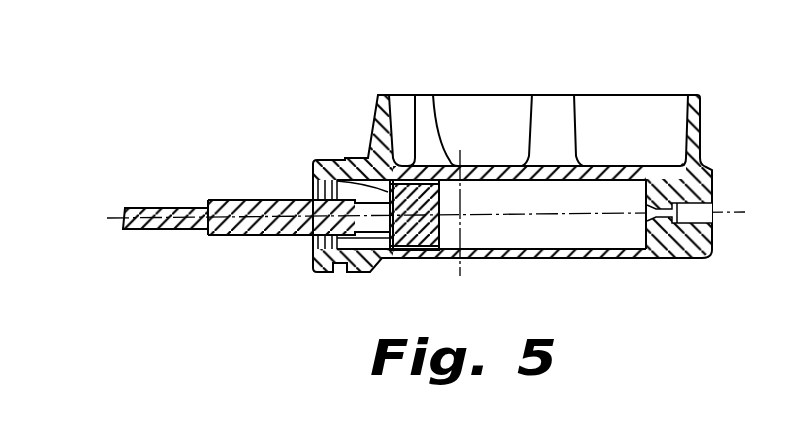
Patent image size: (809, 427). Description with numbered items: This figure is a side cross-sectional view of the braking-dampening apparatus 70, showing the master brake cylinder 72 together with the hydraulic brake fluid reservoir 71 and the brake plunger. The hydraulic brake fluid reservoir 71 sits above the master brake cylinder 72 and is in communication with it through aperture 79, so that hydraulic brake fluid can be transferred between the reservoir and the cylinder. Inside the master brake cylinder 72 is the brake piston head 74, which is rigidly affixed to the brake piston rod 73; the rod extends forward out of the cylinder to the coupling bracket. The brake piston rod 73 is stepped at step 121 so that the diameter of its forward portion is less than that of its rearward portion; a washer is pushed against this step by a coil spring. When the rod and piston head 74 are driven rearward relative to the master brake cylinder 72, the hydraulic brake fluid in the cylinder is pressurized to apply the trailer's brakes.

The braking-dampening apparatus 70 is at (708, 127).
The hydraulic brake fluid reservoir 71 is at (692, 98).
The master brake cylinder 72 is at (647, 257).
The brake piston rod 73 is at (177, 209).
The brake piston head 74 is at (322, 158).
The aperture 79 is at (432, 95).
The step 121 is at (208, 200).